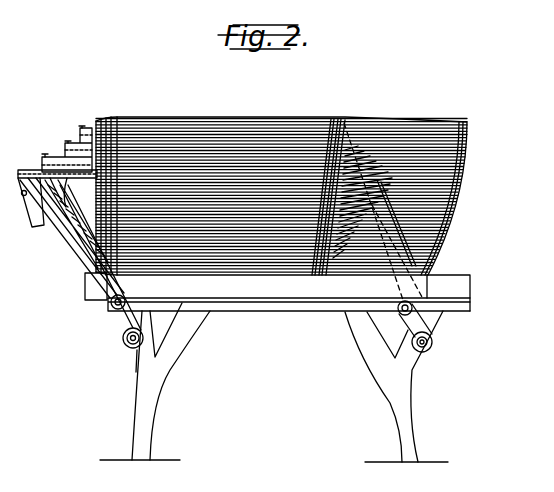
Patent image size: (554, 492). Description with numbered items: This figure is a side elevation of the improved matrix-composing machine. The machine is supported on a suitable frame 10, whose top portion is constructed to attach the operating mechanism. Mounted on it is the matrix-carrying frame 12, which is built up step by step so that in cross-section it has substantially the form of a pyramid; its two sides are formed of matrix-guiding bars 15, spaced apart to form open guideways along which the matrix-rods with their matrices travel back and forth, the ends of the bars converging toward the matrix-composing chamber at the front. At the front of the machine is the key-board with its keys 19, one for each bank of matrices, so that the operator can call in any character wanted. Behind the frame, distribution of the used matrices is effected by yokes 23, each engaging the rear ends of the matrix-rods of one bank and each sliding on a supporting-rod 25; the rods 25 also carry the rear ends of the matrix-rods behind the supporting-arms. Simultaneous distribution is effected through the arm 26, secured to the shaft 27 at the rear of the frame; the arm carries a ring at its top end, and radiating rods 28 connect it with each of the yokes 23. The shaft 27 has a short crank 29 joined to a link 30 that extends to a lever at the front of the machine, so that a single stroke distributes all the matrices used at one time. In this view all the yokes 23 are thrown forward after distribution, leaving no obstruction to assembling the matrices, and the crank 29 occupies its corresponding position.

The frame 10 is at (167, 318).
The matrix-carrying frame 12 is at (241, 118).
The matrix-guiding bars 15 is at (192, 136).
The keys 19 is at (65, 150).
The yoke 23 is at (345, 122).
The supporting-rod 25 is at (428, 123).
The arm 26 is at (421, 287).
The shaft 27 is at (433, 345).
The radiating rods 28 is at (363, 122).
The crank 29 is at (410, 322).
The link 30 is at (84, 255).